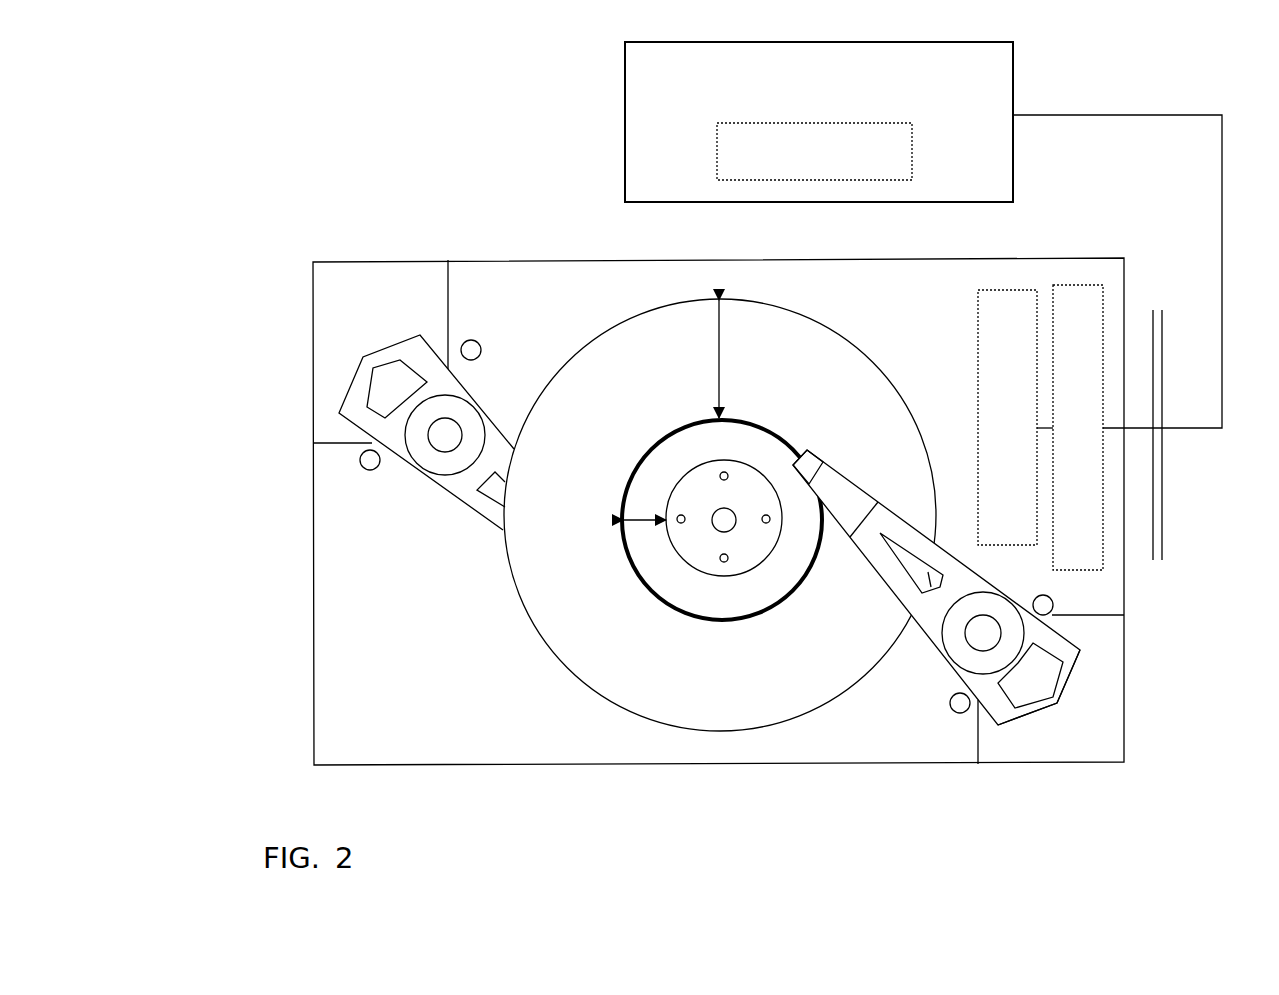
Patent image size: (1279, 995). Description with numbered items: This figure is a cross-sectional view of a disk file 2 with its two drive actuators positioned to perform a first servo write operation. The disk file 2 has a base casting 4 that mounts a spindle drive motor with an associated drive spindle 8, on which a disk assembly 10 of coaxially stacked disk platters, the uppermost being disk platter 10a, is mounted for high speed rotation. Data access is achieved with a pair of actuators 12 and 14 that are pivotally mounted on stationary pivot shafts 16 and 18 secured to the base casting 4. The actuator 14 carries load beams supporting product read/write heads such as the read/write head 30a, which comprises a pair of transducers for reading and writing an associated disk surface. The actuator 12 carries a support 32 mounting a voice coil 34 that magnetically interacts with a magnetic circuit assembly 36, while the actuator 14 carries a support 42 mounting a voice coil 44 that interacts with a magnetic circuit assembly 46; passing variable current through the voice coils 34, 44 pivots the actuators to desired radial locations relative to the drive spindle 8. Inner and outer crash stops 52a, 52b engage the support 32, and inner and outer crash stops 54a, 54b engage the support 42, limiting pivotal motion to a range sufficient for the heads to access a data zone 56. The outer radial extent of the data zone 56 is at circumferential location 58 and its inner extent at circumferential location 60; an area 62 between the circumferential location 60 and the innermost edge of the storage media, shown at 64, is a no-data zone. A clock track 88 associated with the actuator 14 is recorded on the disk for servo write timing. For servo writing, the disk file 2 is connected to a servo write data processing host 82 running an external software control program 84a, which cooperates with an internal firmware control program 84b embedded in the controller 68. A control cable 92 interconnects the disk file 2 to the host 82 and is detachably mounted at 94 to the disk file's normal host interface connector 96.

The disk file 2 is at (368, 230).
The base casting 4 is at (313, 547).
The drive spindle 8 is at (718, 527).
The disk assembly 10 is at (523, 660).
The disk platter 10a is at (593, 405).
The actuator 12 is at (457, 500).
The actuator 14 is at (890, 592).
The stationary pivot shaft 16 is at (430, 447).
The stationary pivot shaft 18 is at (983, 642).
The read/write head 30a is at (813, 465).
The support 32 is at (395, 347).
The voice coil 34 is at (402, 360).
The magnetic circuit assembly 36 is at (452, 295).
The support 42 is at (1033, 715).
The voice coil 44 is at (1053, 685).
The magnetic circuit assembly 46 is at (977, 727).
The inner crash stop 52a is at (370, 470).
The outer crash stop 52b is at (478, 340).
The inner crash stop 54a is at (1035, 597).
The outer crash stop 54b is at (948, 703).
The data zone 56 is at (715, 358).
The circumferential location 58 is at (832, 328).
The circumferential location 60 is at (776, 432).
The no-data zone area 62 is at (646, 520).
The innermost edge of storage media portion 64 is at (728, 577).
The controller 68 is at (1072, 282).
The servo write data processing host 82 is at (848, 40).
The external software control program 84a is at (913, 143).
The internal firmware control program 84b is at (1008, 288).
The clock track 88 is at (720, 623).
The control cable 92 is at (1222, 258).
The detachable mounting 94 is at (1162, 440).
The host interface connector 96 is at (1153, 563).